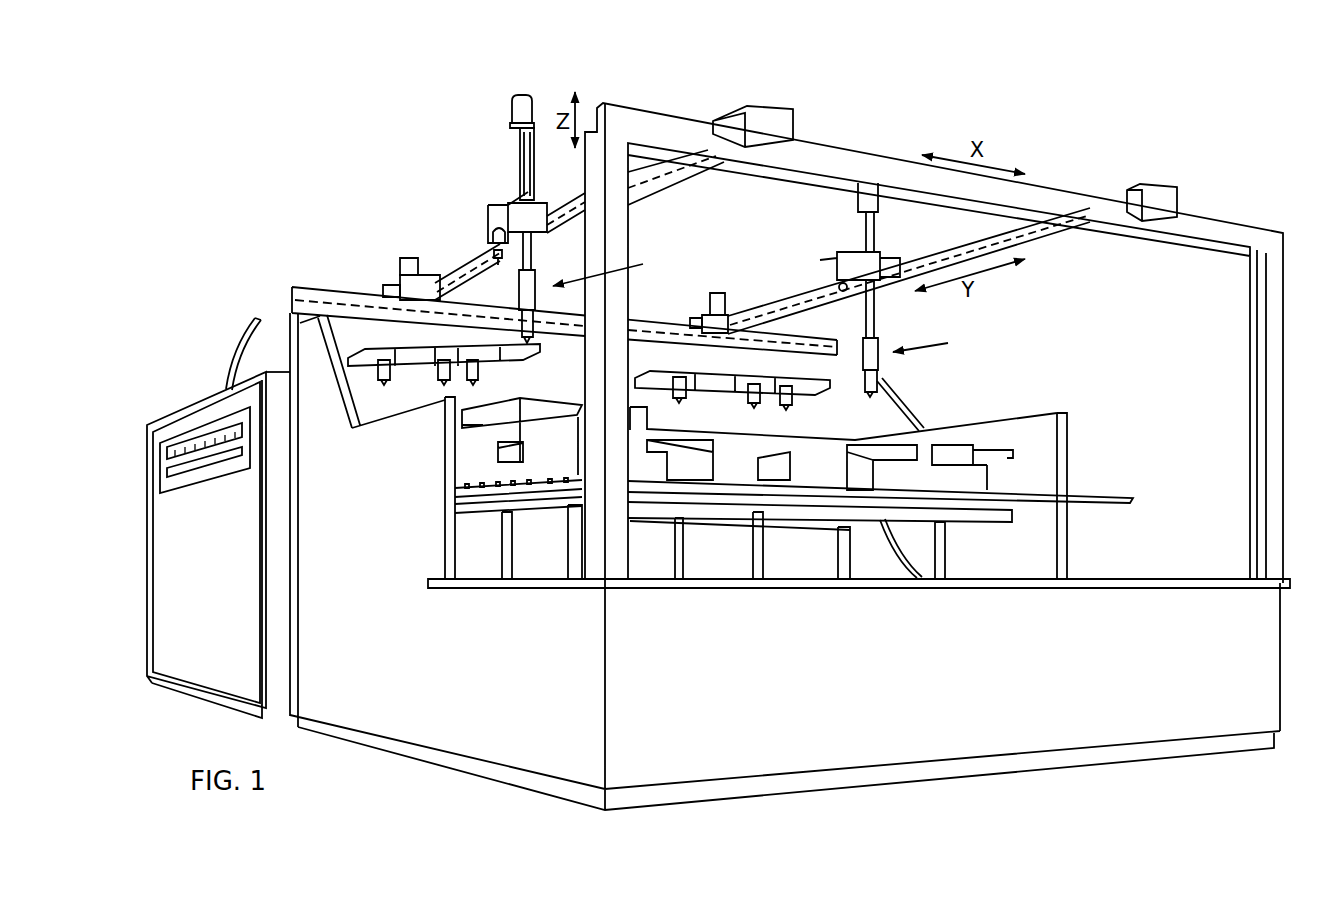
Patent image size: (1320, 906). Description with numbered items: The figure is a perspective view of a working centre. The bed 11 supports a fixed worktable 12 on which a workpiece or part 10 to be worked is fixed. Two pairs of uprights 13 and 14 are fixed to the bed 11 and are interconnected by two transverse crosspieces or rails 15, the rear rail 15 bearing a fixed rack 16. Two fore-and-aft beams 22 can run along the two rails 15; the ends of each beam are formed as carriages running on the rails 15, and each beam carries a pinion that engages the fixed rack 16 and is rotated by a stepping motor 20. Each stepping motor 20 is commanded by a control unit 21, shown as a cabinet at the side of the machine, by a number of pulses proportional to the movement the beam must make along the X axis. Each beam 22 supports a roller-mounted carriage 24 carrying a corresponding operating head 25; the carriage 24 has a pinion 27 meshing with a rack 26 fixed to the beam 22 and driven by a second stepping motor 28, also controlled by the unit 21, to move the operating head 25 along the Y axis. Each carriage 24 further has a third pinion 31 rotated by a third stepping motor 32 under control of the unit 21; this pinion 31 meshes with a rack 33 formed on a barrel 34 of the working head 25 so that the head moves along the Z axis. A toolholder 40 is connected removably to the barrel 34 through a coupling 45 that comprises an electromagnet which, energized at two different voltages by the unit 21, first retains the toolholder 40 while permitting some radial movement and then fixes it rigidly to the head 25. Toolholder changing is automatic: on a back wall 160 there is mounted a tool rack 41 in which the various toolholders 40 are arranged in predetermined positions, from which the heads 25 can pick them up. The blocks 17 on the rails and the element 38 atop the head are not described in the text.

The workpiece 10 is at (967, 447).
The bed 11 is at (1103, 735).
The fixed worktable 12 is at (1090, 497).
The uprights 13 is at (1270, 500).
The uprights 14 is at (437, 550).
The transverse crosspiece or rail 15 is at (304, 287).
The fixed rack 16 is at (333, 296).
The stop block 17 is at (782, 120).
The stepping motor 20 is at (410, 258).
The control unit 21 is at (178, 396).
The fore-and-aft beam 22 is at (656, 173).
The roller-mounted carriage 24 is at (548, 215).
The operating head 25 is at (652, 249).
The rack 26 is at (584, 271).
The pinion 27 is at (498, 265).
The second stepping motor 28 is at (490, 228).
The third pinion 31 is at (530, 208).
The third stepping motor 32 is at (505, 207).
The rack 33 is at (522, 135).
The barrel 34 is at (533, 262).
The motor 38 is at (532, 113).
The toolholder 40 is at (537, 318).
The tool rack 41 is at (420, 358).
The coupling 45 is at (763, 301).
The back wall 160 is at (292, 313).